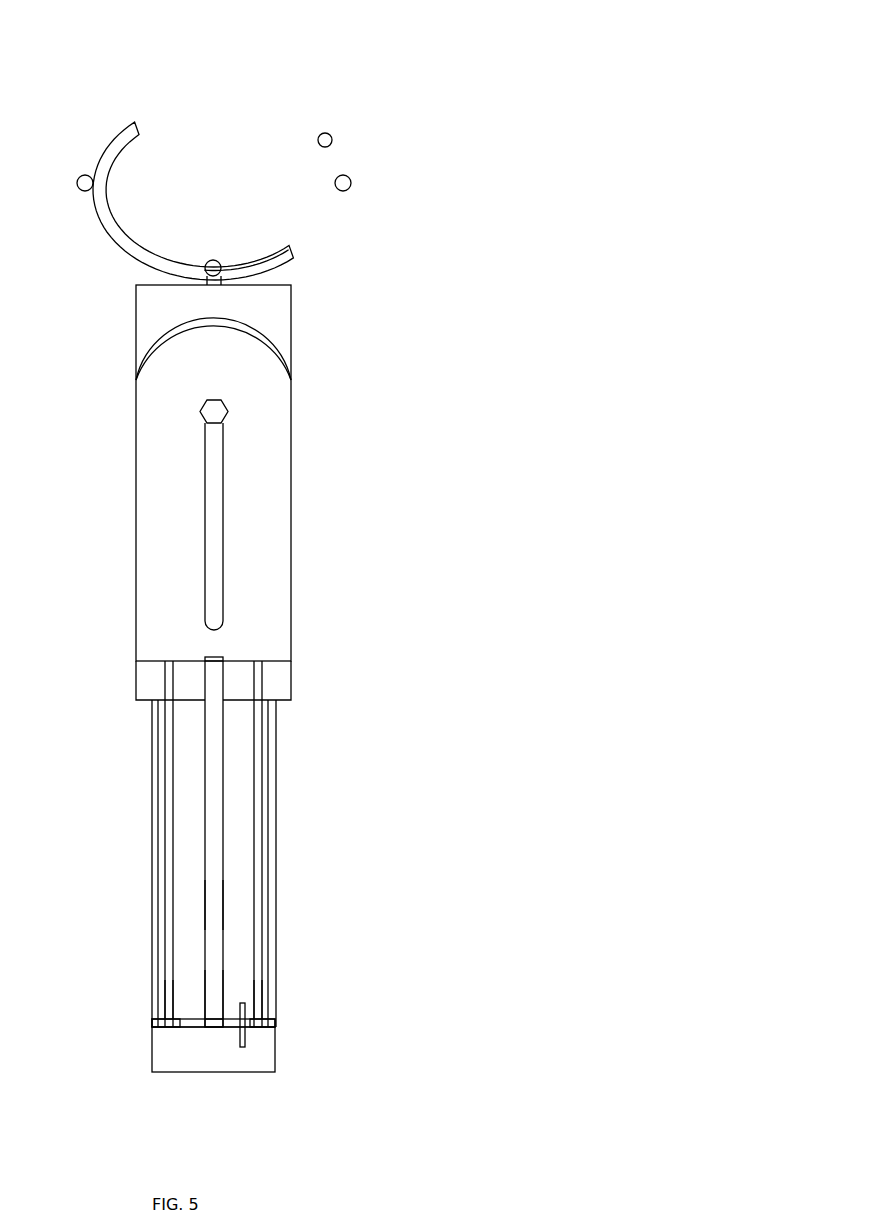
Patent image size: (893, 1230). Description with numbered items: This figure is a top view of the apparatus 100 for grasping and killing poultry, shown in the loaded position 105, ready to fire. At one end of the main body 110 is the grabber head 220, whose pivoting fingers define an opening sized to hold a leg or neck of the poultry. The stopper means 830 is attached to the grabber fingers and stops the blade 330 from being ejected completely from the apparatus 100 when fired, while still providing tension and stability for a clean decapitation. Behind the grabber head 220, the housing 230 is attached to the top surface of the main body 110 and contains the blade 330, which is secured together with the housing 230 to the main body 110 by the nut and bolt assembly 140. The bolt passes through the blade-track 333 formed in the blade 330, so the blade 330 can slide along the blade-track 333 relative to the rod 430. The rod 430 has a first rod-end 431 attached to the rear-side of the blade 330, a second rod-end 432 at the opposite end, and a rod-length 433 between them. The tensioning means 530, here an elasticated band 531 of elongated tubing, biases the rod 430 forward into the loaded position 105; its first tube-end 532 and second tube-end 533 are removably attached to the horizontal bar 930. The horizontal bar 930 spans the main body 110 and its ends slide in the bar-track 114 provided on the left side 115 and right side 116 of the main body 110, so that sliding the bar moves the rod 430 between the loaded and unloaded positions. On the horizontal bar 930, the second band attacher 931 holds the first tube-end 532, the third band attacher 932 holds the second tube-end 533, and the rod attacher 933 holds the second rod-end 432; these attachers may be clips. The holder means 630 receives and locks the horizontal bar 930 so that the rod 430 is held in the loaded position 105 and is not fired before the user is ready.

The apparatus 100 is at (450, 60).
The loaded position 105 is at (488, 100).
The main body 110 is at (172, 1048).
The bar-track 114 is at (152, 743).
The left side 115 is at (155, 772).
The right side 116 is at (277, 790).
The nut and bolt assembly 140 is at (220, 408).
The grabber head 220 is at (110, 145).
The housing 230 is at (284, 318).
The blade 330 is at (272, 527).
The blade-track 333 is at (215, 523).
The rod 430 is at (214, 815).
The first rod-end 431 is at (213, 673).
The second rod-end 432 is at (213, 1002).
The rod-length 433 is at (213, 906).
The tensioning means 530 is at (265, 884).
The elasticated band 531 is at (168, 873).
The first tube-end 532 is at (260, 1000).
The second tube-end 533 is at (168, 1010).
The holder means 630 is at (248, 1037).
The stopper means 830 is at (334, 136).
The horizontal bar 930 is at (195, 1025).
The second band attacher 931 is at (260, 1023).
The third band attacher 932 is at (168, 1022).
The rod attacher 933 is at (215, 1023).